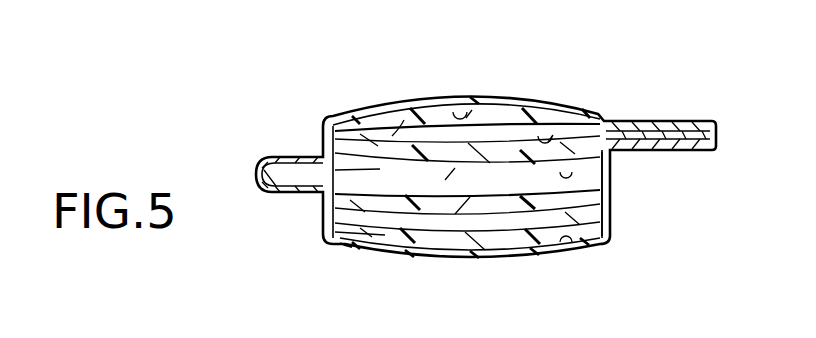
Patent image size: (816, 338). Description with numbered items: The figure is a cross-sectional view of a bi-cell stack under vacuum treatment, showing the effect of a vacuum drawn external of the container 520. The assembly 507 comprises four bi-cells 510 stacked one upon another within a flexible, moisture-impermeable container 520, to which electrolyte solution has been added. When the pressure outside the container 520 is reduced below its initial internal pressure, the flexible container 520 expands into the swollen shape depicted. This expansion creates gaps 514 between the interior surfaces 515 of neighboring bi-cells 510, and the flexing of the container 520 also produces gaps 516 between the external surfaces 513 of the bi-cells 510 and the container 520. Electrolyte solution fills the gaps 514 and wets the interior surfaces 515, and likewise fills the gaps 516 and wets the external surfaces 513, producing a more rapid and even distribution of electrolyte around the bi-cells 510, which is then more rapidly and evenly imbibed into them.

The assembly 507 is at (320, 118).
The bi-cells 510 is at (611, 178).
The external surfaces 513 is at (472, 110).
The gaps 514 is at (383, 178).
The interior surfaces 515 is at (553, 135).
The gaps 516 is at (388, 137).
The container 520 is at (358, 252).